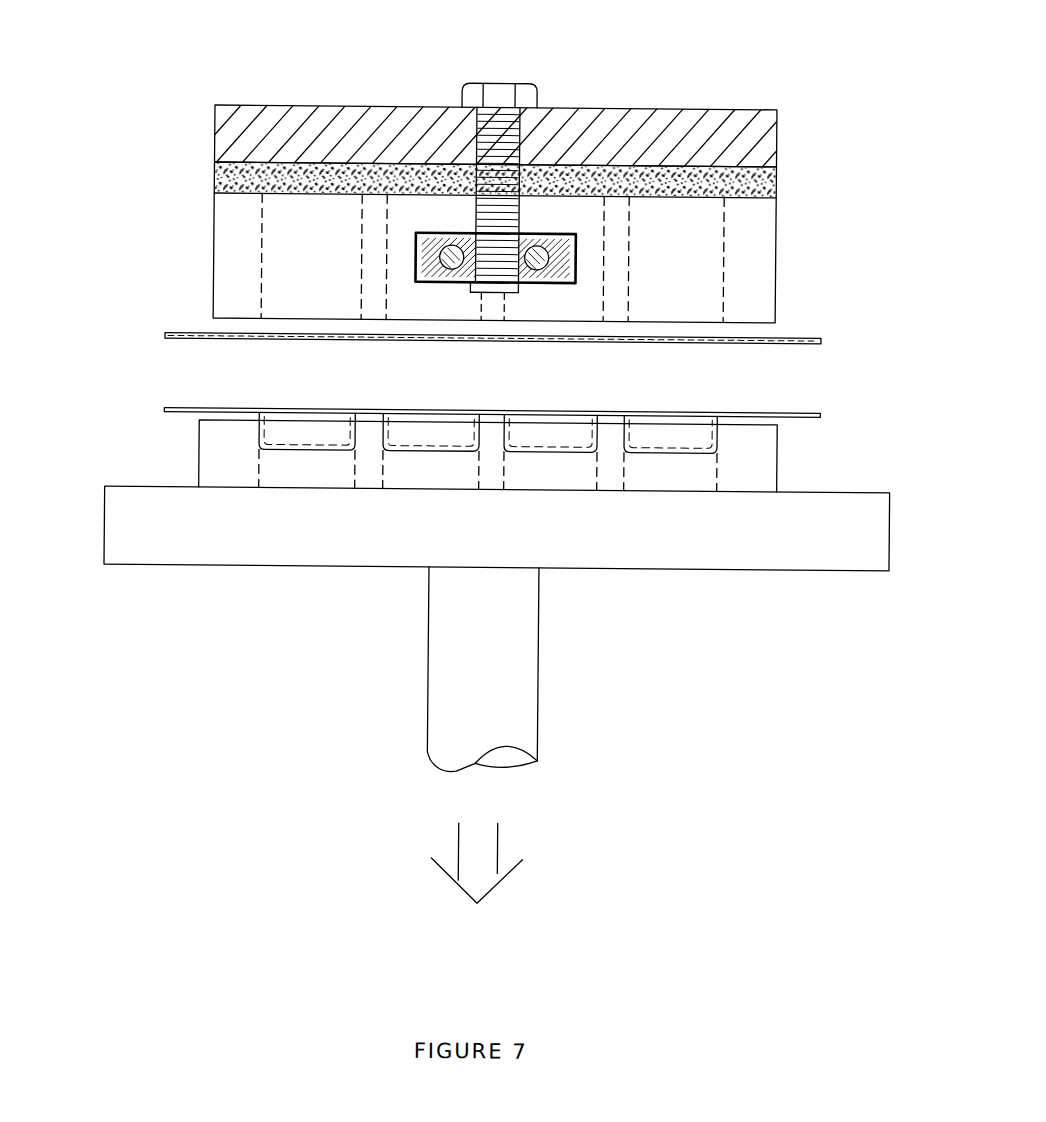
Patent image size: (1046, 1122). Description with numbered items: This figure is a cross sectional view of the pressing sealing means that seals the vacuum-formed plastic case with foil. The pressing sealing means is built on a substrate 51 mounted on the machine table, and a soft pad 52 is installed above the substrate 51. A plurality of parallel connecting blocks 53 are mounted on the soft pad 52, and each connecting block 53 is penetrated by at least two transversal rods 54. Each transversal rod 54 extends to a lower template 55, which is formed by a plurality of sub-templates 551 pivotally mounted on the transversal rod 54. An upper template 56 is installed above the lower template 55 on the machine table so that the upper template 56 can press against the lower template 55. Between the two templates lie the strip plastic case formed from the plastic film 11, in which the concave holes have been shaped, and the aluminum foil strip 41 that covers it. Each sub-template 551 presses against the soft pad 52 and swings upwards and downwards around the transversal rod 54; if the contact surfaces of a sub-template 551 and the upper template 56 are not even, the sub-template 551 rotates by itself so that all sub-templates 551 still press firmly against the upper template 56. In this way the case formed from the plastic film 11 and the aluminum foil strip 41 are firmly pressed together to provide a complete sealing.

The plastic film 11 is at (826, 413).
The aluminum foil strip 41 is at (203, 338).
The substrate 51 is at (672, 136).
The soft pad 52 is at (775, 171).
The connecting block 53 is at (437, 229).
The transversal rod 54 is at (540, 230).
The lower template 55 is at (817, 287).
The sub-template 551 is at (233, 271).
The upper template 56 is at (680, 473).